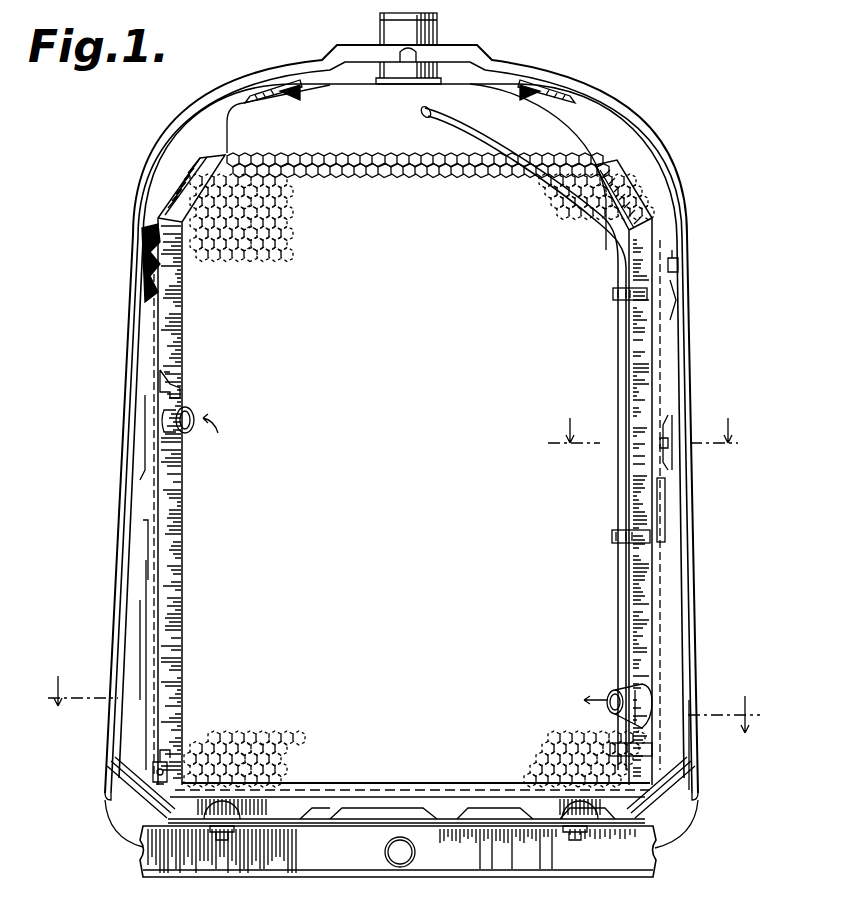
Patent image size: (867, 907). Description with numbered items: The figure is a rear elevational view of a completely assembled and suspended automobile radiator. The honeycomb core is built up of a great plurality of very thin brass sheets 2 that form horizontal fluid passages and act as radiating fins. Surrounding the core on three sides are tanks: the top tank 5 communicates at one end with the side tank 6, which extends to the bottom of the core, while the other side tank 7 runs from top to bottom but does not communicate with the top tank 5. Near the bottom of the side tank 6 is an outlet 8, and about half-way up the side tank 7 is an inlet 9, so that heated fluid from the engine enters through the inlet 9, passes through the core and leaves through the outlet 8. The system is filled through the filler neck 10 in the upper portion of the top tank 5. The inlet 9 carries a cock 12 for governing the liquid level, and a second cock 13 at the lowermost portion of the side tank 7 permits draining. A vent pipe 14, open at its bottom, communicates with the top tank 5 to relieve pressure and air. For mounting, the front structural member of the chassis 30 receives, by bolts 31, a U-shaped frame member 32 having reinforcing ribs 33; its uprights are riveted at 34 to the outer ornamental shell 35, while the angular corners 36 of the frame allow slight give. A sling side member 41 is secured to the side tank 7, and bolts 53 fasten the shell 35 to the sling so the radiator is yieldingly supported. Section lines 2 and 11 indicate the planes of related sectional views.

The brass sheets 2 is at (398, 703).
The top tank 5 is at (236, 118).
The side tank 6 is at (636, 200).
The side tank 7 is at (178, 198).
The outlet 8 is at (606, 694).
The inlet 9 is at (196, 416).
The filler neck 10 is at (440, 36).
The section line 11- 11 is at (650, 422).
The cock 12 is at (178, 386).
The second cock 13 is at (168, 768).
The vent pipe 14 is at (608, 238).
The front structural member of the chassis 30 is at (310, 870).
The bolts 31 is at (222, 838).
The U-shaped frame member 32 is at (290, 822).
The reinforcing ribs 33 is at (375, 822).
The rivets 34 is at (700, 755).
The outer ornamental shell 35 is at (133, 296).
The angular corners 36 is at (143, 800).
The side member 41 is at (138, 576).
The bolts 53 is at (280, 95).